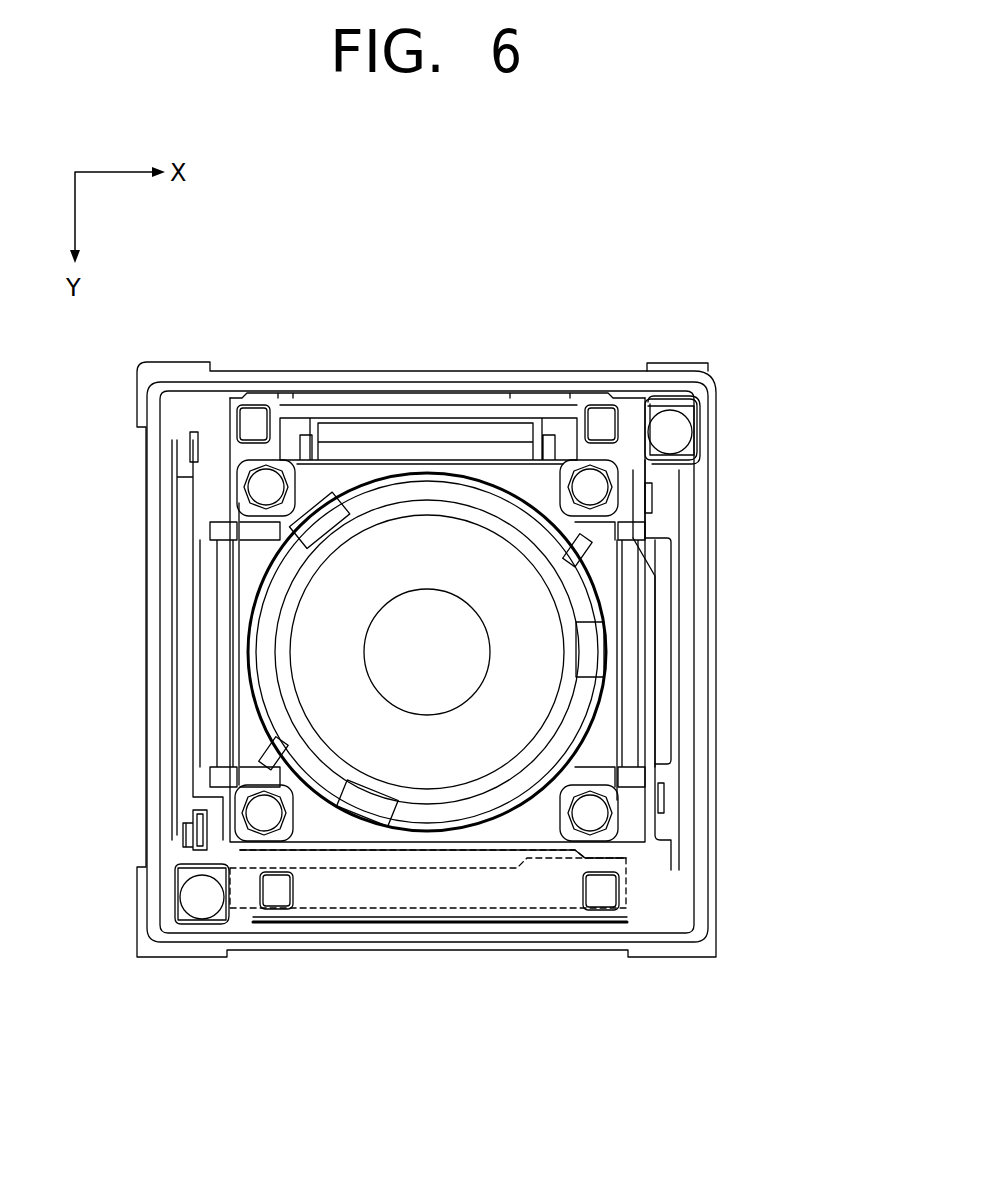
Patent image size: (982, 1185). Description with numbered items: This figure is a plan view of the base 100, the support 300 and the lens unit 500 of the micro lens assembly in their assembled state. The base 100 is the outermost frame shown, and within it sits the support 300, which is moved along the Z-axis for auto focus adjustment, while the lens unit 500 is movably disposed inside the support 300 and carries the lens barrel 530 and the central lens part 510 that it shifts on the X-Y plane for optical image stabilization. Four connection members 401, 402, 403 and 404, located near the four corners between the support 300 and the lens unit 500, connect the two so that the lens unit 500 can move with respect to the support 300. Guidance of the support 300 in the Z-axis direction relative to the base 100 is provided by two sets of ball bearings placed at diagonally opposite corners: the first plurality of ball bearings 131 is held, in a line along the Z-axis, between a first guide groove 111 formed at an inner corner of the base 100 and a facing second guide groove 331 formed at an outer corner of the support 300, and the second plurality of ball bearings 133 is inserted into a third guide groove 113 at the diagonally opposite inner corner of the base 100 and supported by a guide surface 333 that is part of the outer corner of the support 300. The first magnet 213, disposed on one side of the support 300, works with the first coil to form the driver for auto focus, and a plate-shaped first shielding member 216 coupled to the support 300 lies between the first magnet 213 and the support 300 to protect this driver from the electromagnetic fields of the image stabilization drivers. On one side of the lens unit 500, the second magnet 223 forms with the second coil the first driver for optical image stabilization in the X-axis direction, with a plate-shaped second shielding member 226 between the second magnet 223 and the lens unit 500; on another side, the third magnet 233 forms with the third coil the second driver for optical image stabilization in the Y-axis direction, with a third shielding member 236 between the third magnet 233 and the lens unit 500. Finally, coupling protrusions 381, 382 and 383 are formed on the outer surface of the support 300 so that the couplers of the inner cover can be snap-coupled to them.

The base 100 is at (735, 632).
The first guide groove 111 is at (198, 888).
The third guide groove 113 is at (672, 424).
The first plurality of ball bearings 131 is at (198, 828).
The second plurality of ball bearings 133 is at (676, 437).
The first magnet 213 is at (508, 878).
The first shielding member 216 is at (448, 872).
The second magnet 223 is at (210, 644).
The second shielding member 226 is at (222, 566).
The third magnet 233 is at (393, 432).
The third shielding member 236 is at (350, 458).
The support 300 is at (690, 579).
The second guide groove 331 is at (210, 880).
The guide surface 333 is at (652, 428).
The coupling protrusion 381 is at (655, 497).
The coupling protrusion 382 is at (665, 792).
The coupling protrusion 383 is at (190, 443).
The connection member 401 is at (586, 464).
The connection member 402 is at (612, 813).
The connection member 403 is at (243, 808).
The connection member 404 is at (244, 485).
The lens unit 500 is at (622, 537).
The lens part 510 is at (467, 653).
The lens barrel 530 is at (527, 707).